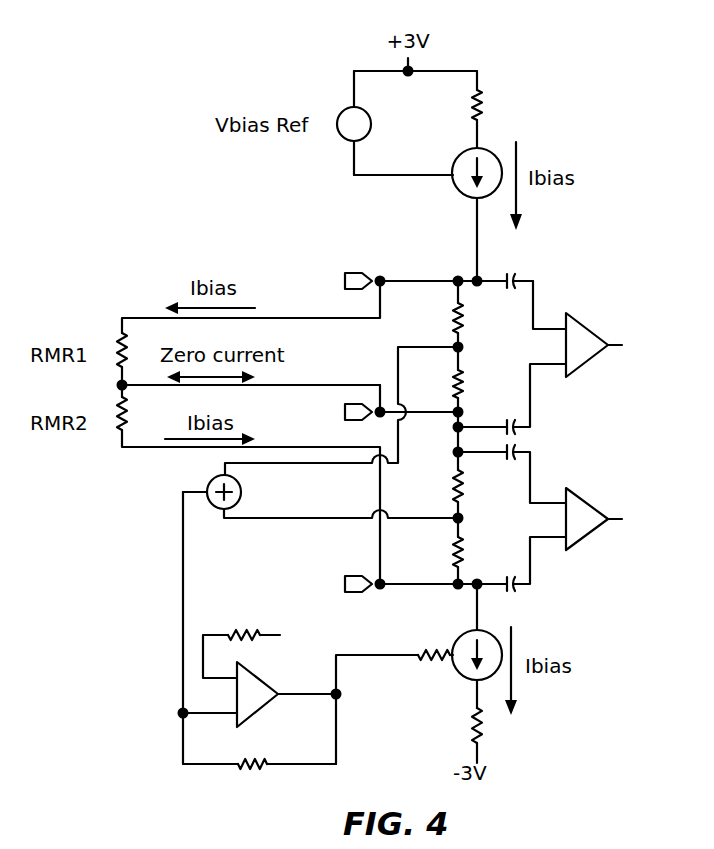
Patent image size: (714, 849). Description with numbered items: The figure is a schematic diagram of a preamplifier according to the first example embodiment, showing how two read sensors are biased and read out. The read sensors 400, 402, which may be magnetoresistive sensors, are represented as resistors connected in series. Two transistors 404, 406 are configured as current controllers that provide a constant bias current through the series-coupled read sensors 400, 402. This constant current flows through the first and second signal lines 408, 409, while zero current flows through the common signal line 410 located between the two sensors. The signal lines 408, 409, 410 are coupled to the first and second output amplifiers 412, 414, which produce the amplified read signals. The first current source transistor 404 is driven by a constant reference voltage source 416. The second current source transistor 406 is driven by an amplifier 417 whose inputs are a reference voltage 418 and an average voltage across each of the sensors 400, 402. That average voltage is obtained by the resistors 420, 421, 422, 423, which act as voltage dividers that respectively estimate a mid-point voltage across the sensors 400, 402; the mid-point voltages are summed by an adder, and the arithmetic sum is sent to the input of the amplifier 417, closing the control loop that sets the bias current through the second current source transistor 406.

The read sensor 400 is at (117, 345).
The read sensor 402 is at (117, 432).
The first current source transistor 404 is at (459, 191).
The second current source transistor 406 is at (459, 673).
The first signal line 408 is at (355, 272).
The second signal line 409 is at (358, 576).
The common signal line 410 is at (358, 385).
The first output amplifier 412 is at (590, 359).
The second output amplifier 414 is at (582, 538).
The constant reference voltage source 416 is at (341, 136).
The amplifier 417 is at (262, 707).
The reference voltage 418 is at (270, 633).
The resistor 420 is at (466, 312).
The resistor 421 is at (466, 378).
The resistor 422 is at (466, 484).
The resistor 423 is at (466, 546).